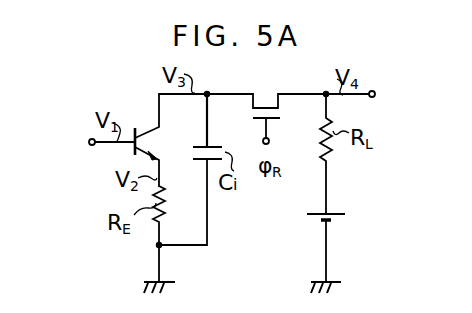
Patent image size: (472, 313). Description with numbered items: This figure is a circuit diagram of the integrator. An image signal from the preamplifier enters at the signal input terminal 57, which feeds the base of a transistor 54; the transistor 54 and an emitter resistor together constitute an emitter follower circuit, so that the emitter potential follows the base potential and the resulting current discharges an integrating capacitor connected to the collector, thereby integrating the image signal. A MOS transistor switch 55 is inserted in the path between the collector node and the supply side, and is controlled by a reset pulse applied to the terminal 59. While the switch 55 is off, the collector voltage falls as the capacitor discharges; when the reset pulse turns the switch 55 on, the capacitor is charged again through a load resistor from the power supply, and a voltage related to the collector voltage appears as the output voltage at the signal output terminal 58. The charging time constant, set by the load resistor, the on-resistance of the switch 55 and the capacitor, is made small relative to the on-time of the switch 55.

The transistor 54 is at (149, 140).
The MOS transistor switch 55 is at (264, 93).
The signal input terminal 57 is at (91, 140).
The signal output terminal 58 is at (375, 93).
The terminal 59 is at (268, 141).